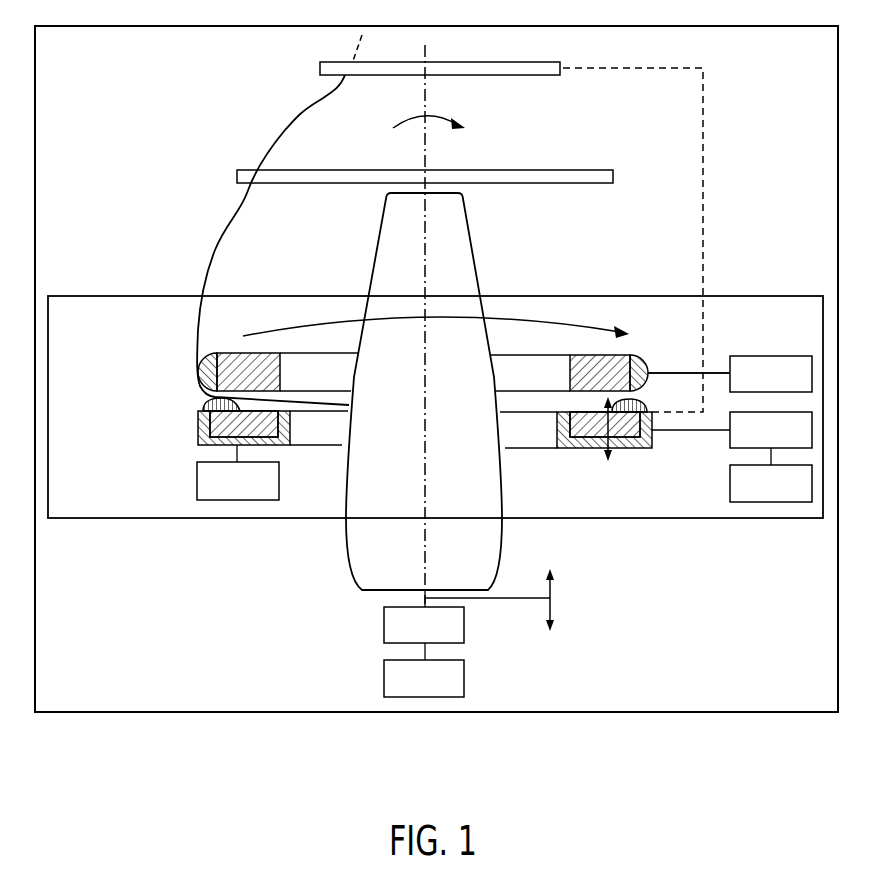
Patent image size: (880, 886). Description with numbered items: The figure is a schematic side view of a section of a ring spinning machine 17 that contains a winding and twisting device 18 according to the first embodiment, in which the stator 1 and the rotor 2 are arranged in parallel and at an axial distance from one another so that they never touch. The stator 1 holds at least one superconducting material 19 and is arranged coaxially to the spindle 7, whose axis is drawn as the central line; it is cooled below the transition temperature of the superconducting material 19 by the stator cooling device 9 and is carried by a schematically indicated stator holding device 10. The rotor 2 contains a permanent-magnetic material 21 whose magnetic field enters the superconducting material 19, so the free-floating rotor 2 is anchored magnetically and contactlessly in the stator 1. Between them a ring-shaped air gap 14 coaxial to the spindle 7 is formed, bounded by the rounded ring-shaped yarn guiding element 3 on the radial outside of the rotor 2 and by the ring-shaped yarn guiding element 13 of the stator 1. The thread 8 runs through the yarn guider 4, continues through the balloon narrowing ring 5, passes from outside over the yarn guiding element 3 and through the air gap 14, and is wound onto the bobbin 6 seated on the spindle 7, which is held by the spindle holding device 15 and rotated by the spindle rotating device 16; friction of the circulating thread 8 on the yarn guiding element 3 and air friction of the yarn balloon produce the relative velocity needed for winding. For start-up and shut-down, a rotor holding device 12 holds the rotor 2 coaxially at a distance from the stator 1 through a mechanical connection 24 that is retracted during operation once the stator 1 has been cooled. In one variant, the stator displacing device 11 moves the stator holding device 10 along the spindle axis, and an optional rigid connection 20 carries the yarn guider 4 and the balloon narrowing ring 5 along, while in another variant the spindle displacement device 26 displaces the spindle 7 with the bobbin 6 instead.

The stator 1 is at (190, 449).
The rotor 2 is at (626, 343).
The yarn guiding element 3 is at (643, 358).
The yarn guider 4 is at (320, 68).
The balloon narrowing ring 5 is at (540, 170).
The bobbin 6 is at (461, 250).
The spindle 7 is at (427, 188).
The thread 8 is at (295, 118).
The stator cooling device 9 is at (197, 482).
The stator holding device 10 is at (729, 437).
The stator displacing device 11 is at (729, 482).
The rotor holding device 12 is at (785, 356).
The yarn guiding element 13 is at (645, 406).
The air gap 14 is at (192, 395).
The spindle holding device 15 is at (418, 614).
The spindle rotating device 16 is at (384, 621).
The ring spinning machine 17 is at (258, 714).
The winding and twisting device 18 is at (267, 521).
The superconducting material 19 is at (575, 448).
The rigid connection 20 is at (705, 172).
The permanent-magnetic material 21 is at (235, 355).
The mechanical connection 24 is at (714, 372).
The spindle displacement device 26 is at (384, 670).